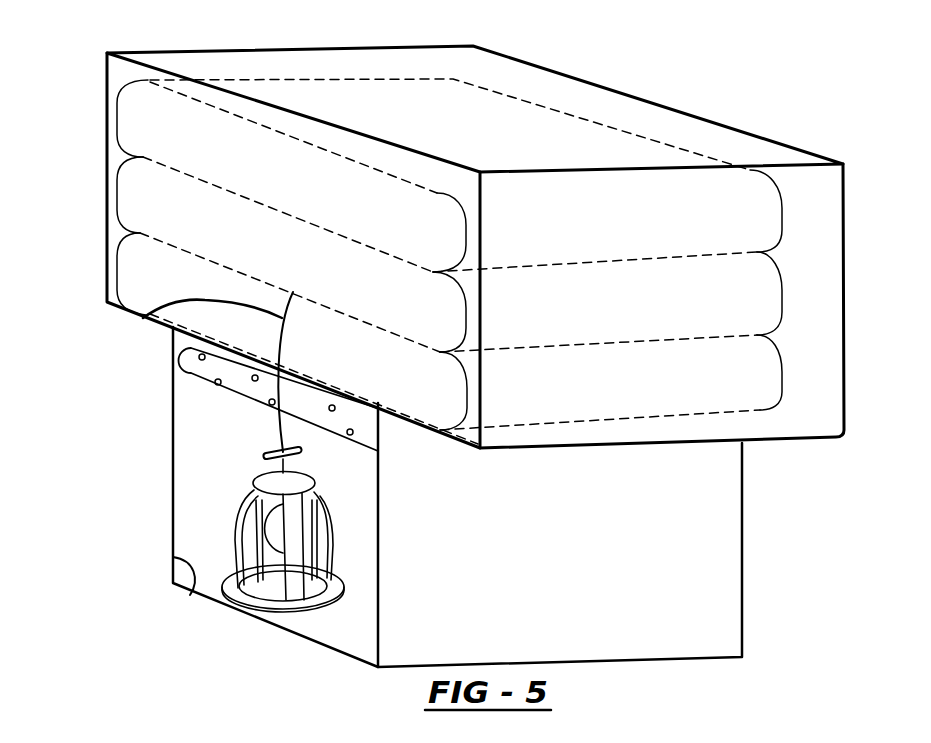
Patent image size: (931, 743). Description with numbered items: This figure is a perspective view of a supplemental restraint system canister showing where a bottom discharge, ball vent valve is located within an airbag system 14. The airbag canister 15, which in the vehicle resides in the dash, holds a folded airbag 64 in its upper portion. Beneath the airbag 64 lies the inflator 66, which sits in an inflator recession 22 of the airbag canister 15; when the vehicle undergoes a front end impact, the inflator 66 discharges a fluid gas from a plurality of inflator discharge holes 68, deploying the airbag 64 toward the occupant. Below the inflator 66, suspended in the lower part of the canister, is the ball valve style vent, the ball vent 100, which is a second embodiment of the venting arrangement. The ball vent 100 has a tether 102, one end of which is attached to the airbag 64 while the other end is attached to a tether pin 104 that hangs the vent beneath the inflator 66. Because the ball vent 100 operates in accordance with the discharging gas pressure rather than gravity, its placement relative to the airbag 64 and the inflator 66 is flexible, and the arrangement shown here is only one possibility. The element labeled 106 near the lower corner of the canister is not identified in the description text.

The airbag system 14 is at (448, 355).
The airbag canister 15 is at (600, 86).
The airbag 64 is at (118, 125).
The inflator recession 22 is at (173, 453).
The inflator 66 is at (180, 357).
The inflator discharge holes 68 is at (215, 384).
The tether 102 is at (143, 318).
The tether pin 104 is at (265, 457).
The ball vent 100 is at (216, 513).
The corner bracket 106 is at (190, 595).